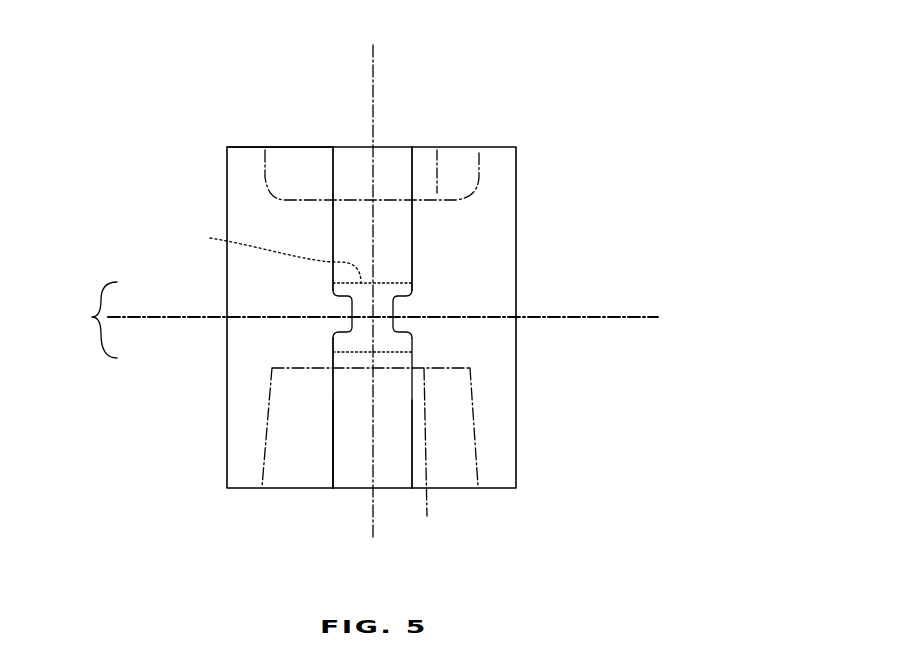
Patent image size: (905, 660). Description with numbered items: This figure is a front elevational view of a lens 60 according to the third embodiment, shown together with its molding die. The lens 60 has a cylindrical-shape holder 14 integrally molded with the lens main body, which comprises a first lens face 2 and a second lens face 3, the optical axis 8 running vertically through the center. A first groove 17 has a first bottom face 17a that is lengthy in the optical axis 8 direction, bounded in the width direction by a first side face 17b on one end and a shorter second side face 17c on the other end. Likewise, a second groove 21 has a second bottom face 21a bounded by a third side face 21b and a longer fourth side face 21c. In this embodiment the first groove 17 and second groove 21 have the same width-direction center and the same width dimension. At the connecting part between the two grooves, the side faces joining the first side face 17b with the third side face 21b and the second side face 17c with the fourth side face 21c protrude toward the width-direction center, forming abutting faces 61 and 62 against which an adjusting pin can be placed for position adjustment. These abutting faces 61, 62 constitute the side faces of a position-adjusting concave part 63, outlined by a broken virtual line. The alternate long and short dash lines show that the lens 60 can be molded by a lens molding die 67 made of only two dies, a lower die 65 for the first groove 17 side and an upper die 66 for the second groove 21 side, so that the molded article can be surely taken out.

The lens 60 is at (209, 146).
The holder 14 is at (295, 147).
The first groove 17 is at (382, 158).
The first bottom face 17a is at (400, 164).
The first side face 17b is at (409, 224).
The second side face 17c is at (337, 207).
The optical axis 8 is at (372, 137).
The first lens face 2 is at (437, 148).
The position-adjusting concave part 63 is at (267, 256).
The abutting face 62 is at (347, 300).
The abutting face 61 is at (399, 300).
The lens molding die 67 is at (92, 317).
The upper die 66 is at (138, 313).
The lower die 65 is at (137, 323).
The second groove 21 is at (353, 472).
The second bottom face 21a is at (337, 472).
The third side face 21b is at (412, 457).
The fourth side face 21c is at (337, 455).
The second lens face 3 is at (370, 452).